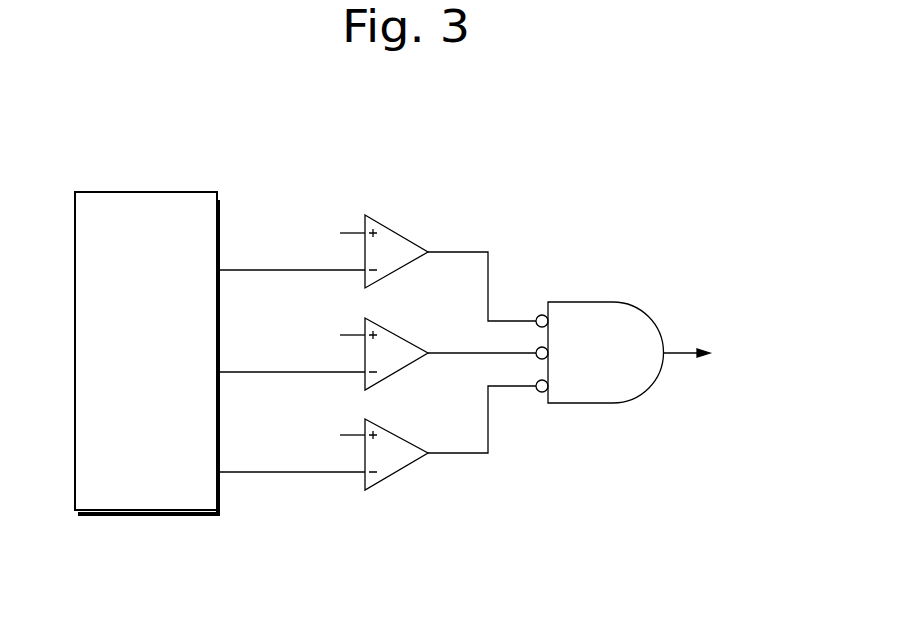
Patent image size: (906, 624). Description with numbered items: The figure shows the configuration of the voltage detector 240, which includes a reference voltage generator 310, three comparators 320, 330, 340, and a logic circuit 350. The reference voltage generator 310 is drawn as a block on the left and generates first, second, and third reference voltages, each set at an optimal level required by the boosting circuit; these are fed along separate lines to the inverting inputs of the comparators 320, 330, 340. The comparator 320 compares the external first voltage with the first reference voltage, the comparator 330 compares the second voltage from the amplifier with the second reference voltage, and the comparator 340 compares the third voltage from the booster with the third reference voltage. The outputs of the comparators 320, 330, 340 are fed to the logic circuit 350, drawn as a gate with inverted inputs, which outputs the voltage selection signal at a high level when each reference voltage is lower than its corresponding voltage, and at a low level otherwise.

The voltage detector 240 is at (551, 124).
The reference voltage generator 310 is at (158, 192).
The comparator 320 is at (397, 231).
The comparator 330 is at (397, 331).
The comparator 340 is at (397, 433).
The logic circuit 350 is at (612, 302).